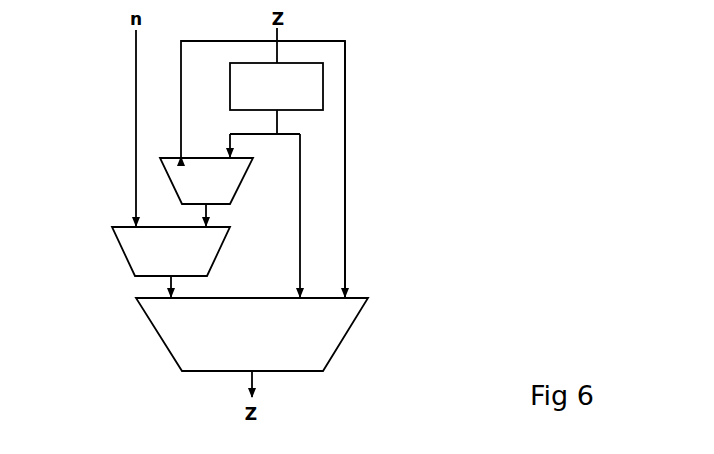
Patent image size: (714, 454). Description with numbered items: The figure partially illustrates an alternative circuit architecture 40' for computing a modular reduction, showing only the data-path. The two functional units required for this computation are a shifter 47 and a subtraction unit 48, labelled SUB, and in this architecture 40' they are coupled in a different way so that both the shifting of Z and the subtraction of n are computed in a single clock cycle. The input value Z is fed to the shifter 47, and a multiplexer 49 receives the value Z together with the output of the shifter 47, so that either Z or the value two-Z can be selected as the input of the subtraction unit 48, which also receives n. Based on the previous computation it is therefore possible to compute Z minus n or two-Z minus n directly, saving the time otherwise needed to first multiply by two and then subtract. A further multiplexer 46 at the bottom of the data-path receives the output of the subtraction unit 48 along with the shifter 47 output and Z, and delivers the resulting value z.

The circuit architecture 40' is at (447, 119).
The multiplexer 46 is at (343, 345).
The shifter 47 is at (230, 85).
The subtraction unit 48 is at (124, 262).
The multiplexer 49 is at (244, 182).